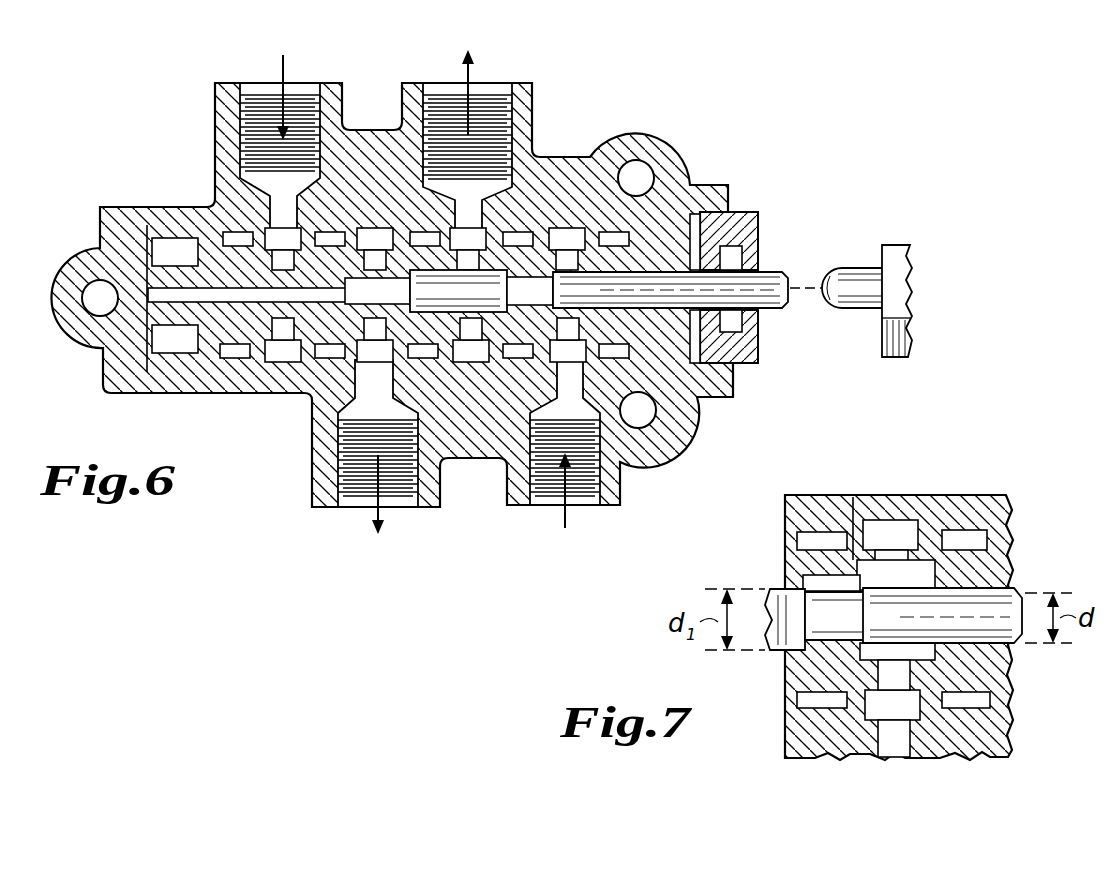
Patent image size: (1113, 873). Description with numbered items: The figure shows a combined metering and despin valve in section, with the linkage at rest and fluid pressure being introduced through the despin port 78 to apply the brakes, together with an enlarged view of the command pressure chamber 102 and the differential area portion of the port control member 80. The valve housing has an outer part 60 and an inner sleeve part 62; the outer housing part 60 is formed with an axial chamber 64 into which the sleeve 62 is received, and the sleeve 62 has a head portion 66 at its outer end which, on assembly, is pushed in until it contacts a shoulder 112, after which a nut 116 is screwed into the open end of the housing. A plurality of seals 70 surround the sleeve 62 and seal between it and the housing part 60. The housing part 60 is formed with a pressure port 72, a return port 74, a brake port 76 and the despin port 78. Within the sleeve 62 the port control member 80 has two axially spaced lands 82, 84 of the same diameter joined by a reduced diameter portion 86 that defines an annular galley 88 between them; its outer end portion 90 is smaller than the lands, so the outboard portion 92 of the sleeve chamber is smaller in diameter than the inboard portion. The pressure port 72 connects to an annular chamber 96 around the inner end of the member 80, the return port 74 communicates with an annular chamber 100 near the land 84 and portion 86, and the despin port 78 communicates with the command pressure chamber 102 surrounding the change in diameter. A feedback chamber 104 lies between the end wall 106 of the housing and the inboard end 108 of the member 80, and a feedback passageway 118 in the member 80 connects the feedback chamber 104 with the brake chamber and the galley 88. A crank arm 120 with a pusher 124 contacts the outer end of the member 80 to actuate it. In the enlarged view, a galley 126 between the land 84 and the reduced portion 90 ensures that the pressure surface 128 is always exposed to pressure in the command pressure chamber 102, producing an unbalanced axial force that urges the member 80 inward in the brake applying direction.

In FIG. 6, the outer housing part 60 is at (200, 394).
In FIG. 7, the outer housing part 60 is at (938, 500).
In FIG. 6, the inner sleeve part 62 is at (665, 200).
In FIG. 7, the inner sleeve part 62 is at (978, 562).
In FIG. 6, the axial chamber 64 is at (305, 392).
In FIG. 6, the head portion 66 is at (735, 224).
In FIG. 6, the seals 70 is at (236, 232).
In FIG. 7, the seals 70 is at (830, 532).
In FIG. 6, the pressure port 72 is at (228, 84).
In FIG. 6, the return port 74 is at (505, 95).
In FIG. 6, the brake port 76 is at (348, 500).
In FIG. 6, the despin port 78 is at (535, 500).
In FIG. 7, the despin port 78 is at (912, 745).
In FIG. 6, the port control member 80 is at (732, 296).
In FIG. 7, the port control member 80 is at (965, 598).
In FIG. 6, the land 82 is at (228, 322).
In FIG. 6, the land 84 is at (492, 312).
In FIG. 7, the land 84 is at (786, 670).
In FIG. 6, the reduced diameter portion 86 is at (455, 312).
In FIG. 6, the annular galley 88 is at (372, 228).
In FIG. 6, the outer end portion 90 is at (783, 270).
In FIG. 7, the outer end portion 90 is at (1012, 678).
In FIG. 6, the outboard chamber portion 92 is at (642, 460).
In FIG. 6, the annular chamber 96 is at (222, 236).
In FIG. 6, the annular chamber 100 is at (552, 228).
In FIG. 6, the command pressure chamber 102 is at (594, 250).
In FIG. 7, the command pressure chamber 102 is at (853, 530).
In FIG. 6, the feedback chamber 104 is at (142, 212).
In FIG. 6, the end wall 106 is at (135, 360).
In FIG. 6, the inboard end 108 is at (95, 250).
In FIG. 6, the shoulder 112 is at (700, 214).
In FIG. 6, the nut 116 is at (753, 226).
In FIG. 6, the feedback passageway 118 is at (180, 302).
In FIG. 6, the crank arm 120 is at (895, 360).
In FIG. 6, the pusher 124 is at (862, 272).
In FIG. 7, the galley 126 is at (830, 593).
In FIG. 7, the pressure surface 128 is at (800, 662).